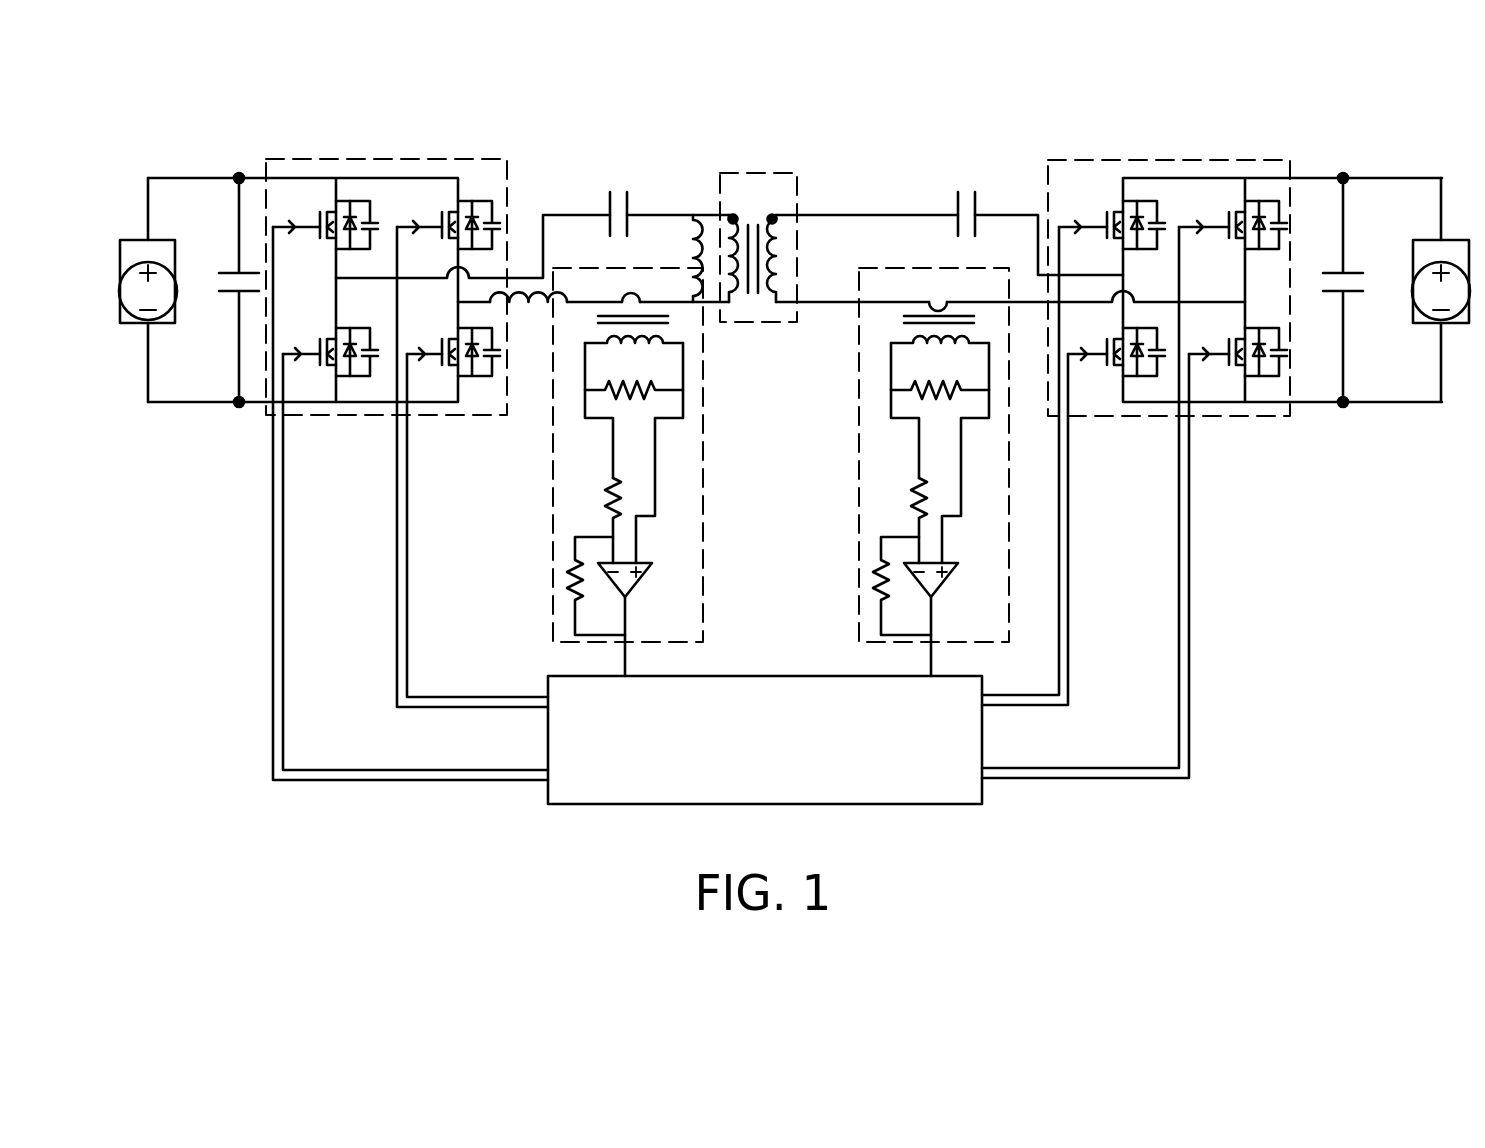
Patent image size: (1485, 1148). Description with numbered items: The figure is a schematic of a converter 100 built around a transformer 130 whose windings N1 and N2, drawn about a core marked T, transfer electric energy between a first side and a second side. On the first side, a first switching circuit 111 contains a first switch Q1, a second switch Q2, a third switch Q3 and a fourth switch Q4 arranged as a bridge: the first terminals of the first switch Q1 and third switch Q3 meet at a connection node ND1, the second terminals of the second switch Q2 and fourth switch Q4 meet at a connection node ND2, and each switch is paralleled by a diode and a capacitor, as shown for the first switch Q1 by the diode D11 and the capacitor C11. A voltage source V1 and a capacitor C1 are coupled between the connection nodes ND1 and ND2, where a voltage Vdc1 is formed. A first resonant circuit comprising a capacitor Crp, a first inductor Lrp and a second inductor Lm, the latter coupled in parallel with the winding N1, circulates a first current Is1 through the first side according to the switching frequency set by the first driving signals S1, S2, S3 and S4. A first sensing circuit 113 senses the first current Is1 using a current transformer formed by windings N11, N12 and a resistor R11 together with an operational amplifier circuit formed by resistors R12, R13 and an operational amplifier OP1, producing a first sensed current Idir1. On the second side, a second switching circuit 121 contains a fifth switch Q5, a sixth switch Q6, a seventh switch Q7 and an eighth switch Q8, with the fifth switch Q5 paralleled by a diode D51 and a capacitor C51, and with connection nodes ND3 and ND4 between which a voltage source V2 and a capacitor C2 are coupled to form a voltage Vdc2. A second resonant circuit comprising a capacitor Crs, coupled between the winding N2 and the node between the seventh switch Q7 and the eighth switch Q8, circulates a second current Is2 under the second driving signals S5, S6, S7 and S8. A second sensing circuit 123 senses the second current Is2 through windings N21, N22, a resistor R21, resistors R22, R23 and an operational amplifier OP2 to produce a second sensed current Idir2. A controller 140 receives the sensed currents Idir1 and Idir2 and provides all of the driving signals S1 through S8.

The converter 100 is at (1362, 830).
The first switching circuit 111 is at (274, 158).
The first sensing circuit 113 is at (703, 550).
The second switching circuit 121 is at (1088, 160).
The second sensing circuit 123 is at (1010, 548).
The transformer 130 is at (768, 172).
The controller 140 is at (982, 789).
The voltage source V1 is at (128, 240).
The voltage source V2 is at (1442, 240).
The capacitor C1 is at (233, 271).
The capacitor C2 is at (1335, 272).
The voltage Vdc1 is at (206, 305).
The voltage Vdc2 is at (1375, 313).
The connection node ND1 is at (217, 192).
The connection node ND2 is at (217, 388).
The connection node ND3 is at (1365, 193).
The connection node ND4 is at (1365, 390).
The first switch Q1 is at (325, 218).
The second switch Q2 is at (330, 343).
The third switch Q3 is at (448, 218).
The fourth switch Q4 is at (452, 343).
The fifth switch Q5 is at (1112, 218).
The sixth switch Q6 is at (1115, 343).
The seventh switch Q7 is at (1233, 218).
The eighth switch Q8 is at (1236, 343).
The diode D11 is at (352, 209).
The capacitor C11 is at (374, 221).
The diode D51 is at (1138, 209).
The capacitor C51 is at (1161, 221).
The first inductor Lrp is at (528, 327).
The capacitor Crp is at (592, 220).
The second inductor Lm is at (675, 258).
The capacitor Crs is at (962, 227).
The first current Is1 is at (657, 193).
The second current Is2 is at (878, 195).
The winding N1 is at (737, 237).
The winding N2 is at (777, 237).
The transformer core T is at (751, 273).
The winding N11 is at (628, 285).
The winding N12 is at (634, 439).
The winding N21 is at (937, 290).
The winding N22 is at (940, 439).
The resistor R11 is at (612, 391).
The resistor R12 is at (589, 520).
The resistor R13 is at (574, 568).
The resistor R21 is at (918, 391).
The resistor R22 is at (895, 520).
The resistor R23 is at (880, 568).
The operational amplifier OP1 is at (640, 577).
The operational amplifier OP2 is at (946, 577).
The first sensed current Idir1 is at (653, 636).
The second sensed current Idir2 is at (961, 636).
The first driving signal S1 is at (273, 533).
The first driving signal S2 is at (283, 528).
The first driving signal S3 is at (397, 632).
The first driving signal S4 is at (407, 633).
The second driving signal S5 is at (1058, 637).
The second driving signal S6 is at (1068, 638).
The second driving signal S7 is at (1179, 745).
The second driving signal S8 is at (1189, 745).